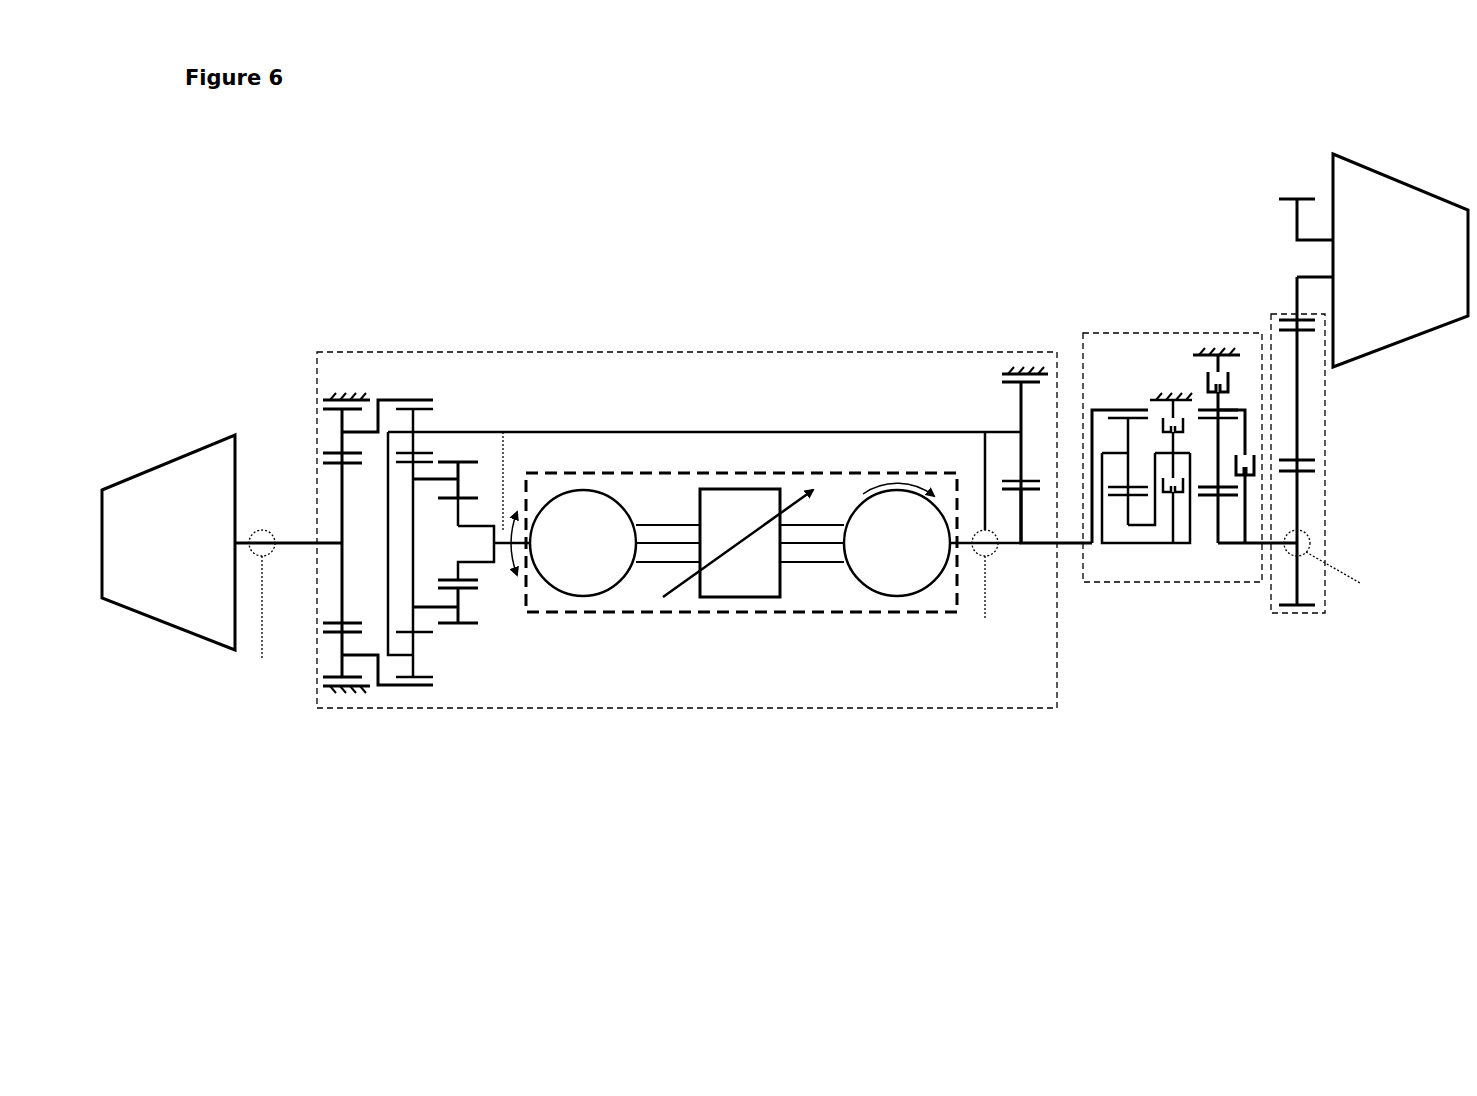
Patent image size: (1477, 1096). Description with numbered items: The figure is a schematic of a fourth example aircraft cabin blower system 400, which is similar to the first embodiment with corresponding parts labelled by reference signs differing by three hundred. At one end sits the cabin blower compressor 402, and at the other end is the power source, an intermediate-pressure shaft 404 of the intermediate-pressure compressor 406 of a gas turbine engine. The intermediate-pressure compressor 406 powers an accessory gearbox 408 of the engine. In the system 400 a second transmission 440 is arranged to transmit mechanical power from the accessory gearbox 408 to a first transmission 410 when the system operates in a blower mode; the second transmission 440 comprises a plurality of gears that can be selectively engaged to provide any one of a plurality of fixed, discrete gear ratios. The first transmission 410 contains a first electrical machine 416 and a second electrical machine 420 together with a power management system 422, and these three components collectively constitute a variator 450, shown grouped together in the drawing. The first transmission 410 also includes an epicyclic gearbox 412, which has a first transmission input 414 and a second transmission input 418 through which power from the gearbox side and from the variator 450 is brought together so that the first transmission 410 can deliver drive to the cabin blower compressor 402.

The aircraft cabin blower system 400 is at (303, 228).
The cabin blower compressor 402 is at (162, 482).
The intermediate-pressure shaft 404 is at (1297, 277).
The intermediate-pressure compressor 406 is at (1387, 200).
The accessory gearbox 408 is at (1324, 485).
The first transmission 410 is at (427, 345).
The epicyclic gearbox 412 is at (427, 653).
The first transmission input 414 is at (489, 432).
The first electrical machine 416 is at (895, 500).
The second transmission input 418 is at (528, 605).
The second electrical machine 420 is at (594, 498).
The power management system 422 is at (747, 573).
The second transmission 440 is at (1102, 332).
The variator 450 is at (830, 613).